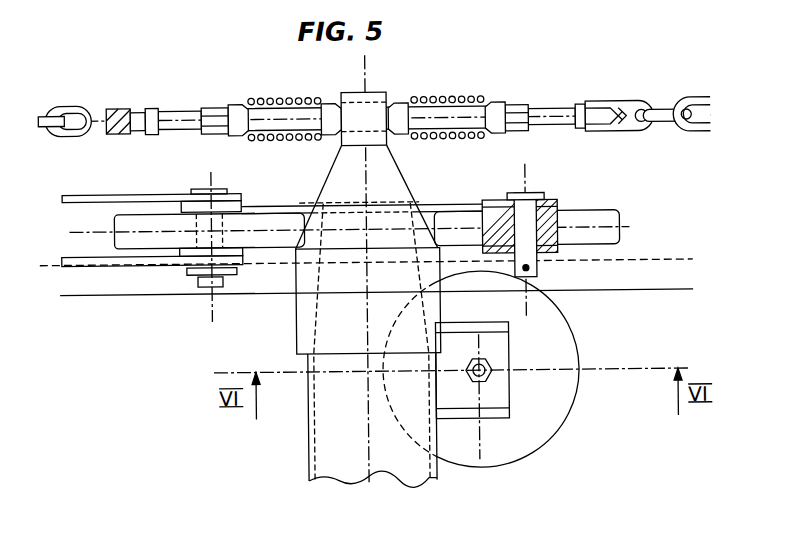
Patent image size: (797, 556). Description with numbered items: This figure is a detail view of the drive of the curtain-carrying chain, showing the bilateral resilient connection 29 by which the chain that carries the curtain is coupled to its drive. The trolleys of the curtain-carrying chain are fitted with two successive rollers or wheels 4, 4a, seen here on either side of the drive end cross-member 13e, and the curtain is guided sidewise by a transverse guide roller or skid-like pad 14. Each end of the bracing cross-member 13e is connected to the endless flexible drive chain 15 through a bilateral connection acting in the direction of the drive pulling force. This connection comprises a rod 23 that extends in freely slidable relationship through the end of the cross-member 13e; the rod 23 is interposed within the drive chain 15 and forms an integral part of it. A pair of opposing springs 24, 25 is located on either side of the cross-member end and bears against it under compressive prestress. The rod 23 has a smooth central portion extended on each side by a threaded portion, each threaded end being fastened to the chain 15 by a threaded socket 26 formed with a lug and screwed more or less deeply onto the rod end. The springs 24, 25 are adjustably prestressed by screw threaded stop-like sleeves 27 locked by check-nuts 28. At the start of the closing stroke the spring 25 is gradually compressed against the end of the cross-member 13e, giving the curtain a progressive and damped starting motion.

The roller 4 is at (148, 212).
The roller 4a is at (598, 213).
The drive end cross-member 13e is at (337, 447).
The transverse guide roller 14 is at (555, 407).
The drive chain 15 is at (60, 134).
The rod 23 is at (444, 110).
The spring 24 is at (298, 98).
The spring 25 is at (427, 97).
The threaded socket 26 is at (603, 103).
The stop-like sleeve 27 is at (244, 135).
The check-nut 28 is at (213, 106).
The bilateral resilient connection 29 is at (382, 82).